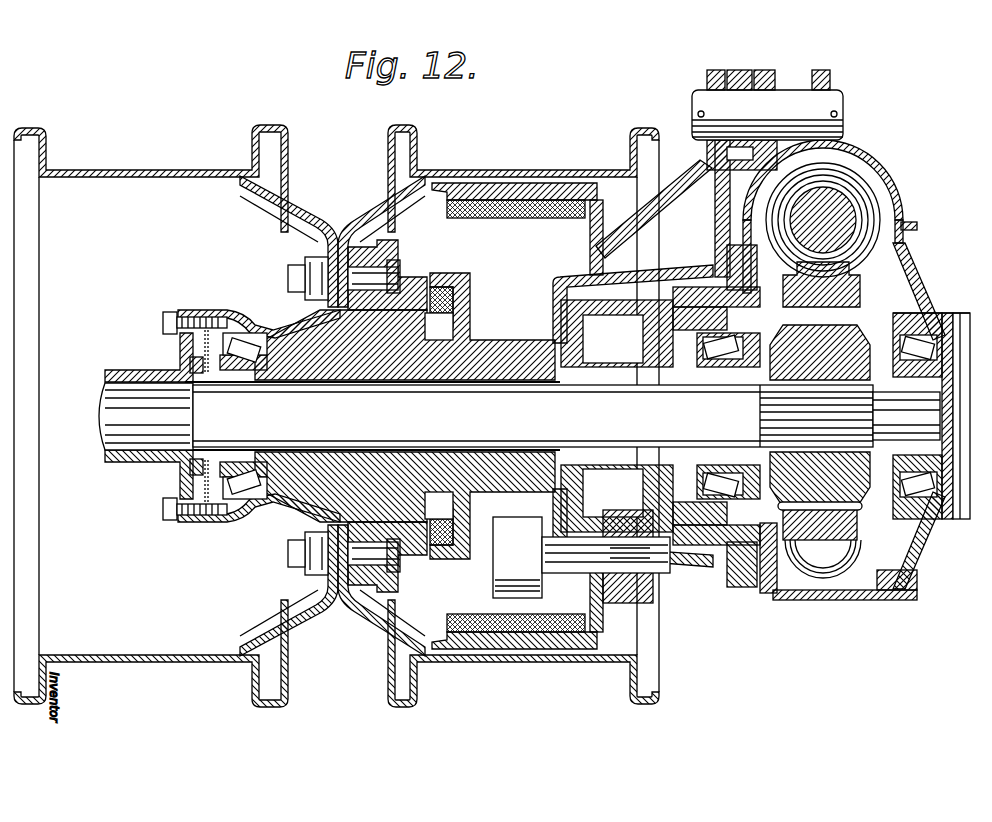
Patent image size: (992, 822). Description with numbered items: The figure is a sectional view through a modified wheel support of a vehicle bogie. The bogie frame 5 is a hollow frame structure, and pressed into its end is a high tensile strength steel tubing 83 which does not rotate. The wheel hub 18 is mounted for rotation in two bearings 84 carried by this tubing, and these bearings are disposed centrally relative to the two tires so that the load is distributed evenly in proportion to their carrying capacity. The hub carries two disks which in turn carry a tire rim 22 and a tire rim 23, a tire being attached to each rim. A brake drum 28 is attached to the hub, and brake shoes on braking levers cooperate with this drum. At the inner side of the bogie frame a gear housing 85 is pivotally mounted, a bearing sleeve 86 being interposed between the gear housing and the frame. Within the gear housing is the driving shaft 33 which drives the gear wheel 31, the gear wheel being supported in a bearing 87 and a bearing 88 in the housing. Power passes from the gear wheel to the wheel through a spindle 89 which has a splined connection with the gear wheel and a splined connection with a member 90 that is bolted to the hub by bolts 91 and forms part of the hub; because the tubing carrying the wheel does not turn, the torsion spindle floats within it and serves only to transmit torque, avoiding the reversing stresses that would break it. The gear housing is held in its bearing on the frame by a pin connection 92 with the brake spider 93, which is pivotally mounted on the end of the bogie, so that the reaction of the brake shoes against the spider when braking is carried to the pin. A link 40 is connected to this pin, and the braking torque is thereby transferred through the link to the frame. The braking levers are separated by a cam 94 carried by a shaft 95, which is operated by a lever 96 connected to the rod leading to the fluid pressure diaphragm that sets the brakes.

The bogie frame 5 is at (613, 307).
The hub 18 is at (393, 307).
The tire rim 22 is at (147, 164).
The tire rim 23 is at (490, 175).
The brake drum 28 is at (540, 190).
The gear wheel 31 is at (847, 280).
The driving shaft 33 is at (828, 203).
The link 40 is at (740, 73).
The steel tubing 83 is at (477, 377).
The bearings 84 is at (243, 347).
The gear housing 85 is at (900, 203).
The bearing sleeve 86 is at (710, 303).
The bearing 87 is at (723, 357).
The bearing 88 is at (930, 340).
The spindle 89 is at (519, 416).
The member 90 is at (133, 370).
The bolts 91 is at (163, 316).
The pin connection 92 is at (787, 95).
The brake spider 93 is at (687, 177).
The cam 94 is at (510, 548).
The shaft 95 is at (715, 565).
The lever 96 is at (677, 583).